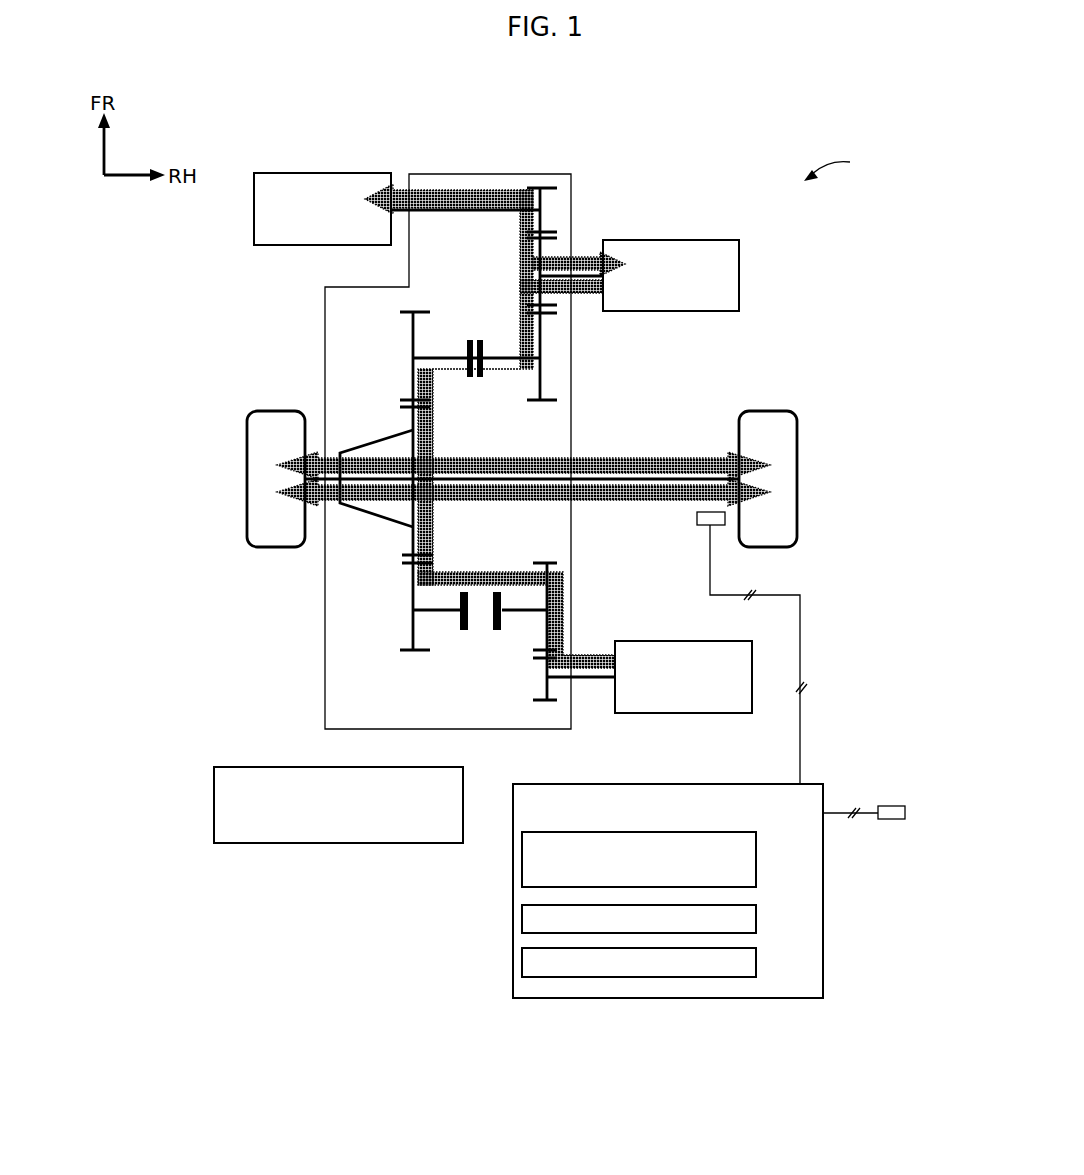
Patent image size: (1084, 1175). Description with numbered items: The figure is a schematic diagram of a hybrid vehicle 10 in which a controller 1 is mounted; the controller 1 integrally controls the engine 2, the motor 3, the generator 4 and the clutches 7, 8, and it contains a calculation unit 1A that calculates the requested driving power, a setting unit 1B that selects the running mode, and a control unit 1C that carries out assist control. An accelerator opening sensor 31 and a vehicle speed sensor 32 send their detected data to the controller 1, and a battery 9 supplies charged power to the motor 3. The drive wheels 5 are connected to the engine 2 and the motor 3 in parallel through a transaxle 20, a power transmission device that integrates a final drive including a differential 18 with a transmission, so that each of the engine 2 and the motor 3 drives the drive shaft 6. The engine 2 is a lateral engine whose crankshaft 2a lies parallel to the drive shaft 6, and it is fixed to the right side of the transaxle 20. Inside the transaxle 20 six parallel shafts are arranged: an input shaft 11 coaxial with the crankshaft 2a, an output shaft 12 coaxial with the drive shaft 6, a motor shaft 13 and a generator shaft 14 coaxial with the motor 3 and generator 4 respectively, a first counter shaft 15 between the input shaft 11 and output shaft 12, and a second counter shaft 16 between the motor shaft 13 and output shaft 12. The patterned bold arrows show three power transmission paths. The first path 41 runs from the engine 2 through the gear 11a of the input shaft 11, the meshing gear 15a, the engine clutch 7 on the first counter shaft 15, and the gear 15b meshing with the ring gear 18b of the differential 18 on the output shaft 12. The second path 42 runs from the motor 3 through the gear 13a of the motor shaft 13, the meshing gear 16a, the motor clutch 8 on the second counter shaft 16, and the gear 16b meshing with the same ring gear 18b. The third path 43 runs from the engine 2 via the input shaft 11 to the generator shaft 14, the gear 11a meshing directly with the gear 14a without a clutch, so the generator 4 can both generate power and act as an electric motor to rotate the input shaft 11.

The controller 1 is at (668, 871).
The calculation unit 1A is at (759, 860).
The setting unit 1B is at (759, 919).
The control unit 1C is at (759, 963).
The engine 2 is at (740, 275).
The crankshaft 2a is at (594, 298).
The motor 3 is at (641, 713).
The generator 4 is at (284, 246).
The drive wheels 5 is at (247, 427).
The drive shaft 6 is at (637, 470).
The engine clutch 7 is at (466, 338).
The motor clutch 8 is at (463, 635).
The battery 9 is at (288, 845).
The vehicle 10 is at (843, 161).
The input shaft 11 is at (548, 272).
The gear 11a is at (522, 284).
The output shaft 12 is at (481, 497).
The motor shaft 13 is at (560, 680).
The gear 13a is at (545, 688).
The generator shaft 14 is at (436, 212).
The gear 14a is at (524, 226).
The first counter shaft 15 is at (454, 372).
The gear 15a is at (533, 402).
The gear 15b is at (412, 332).
The second counter shaft 16 is at (511, 605).
The gear 16a is at (543, 630).
The gear 16b is at (412, 616).
The differential 18 is at (400, 520).
The ring gear 18b is at (412, 421).
The transaxle 20 is at (318, 347).
The accelerator opening sensor 31 is at (893, 820).
The vehicle speed sensor 32 is at (701, 528).
The first path 41 is at (540, 364).
The second path 42 is at (563, 608).
The third path 43 is at (533, 184).